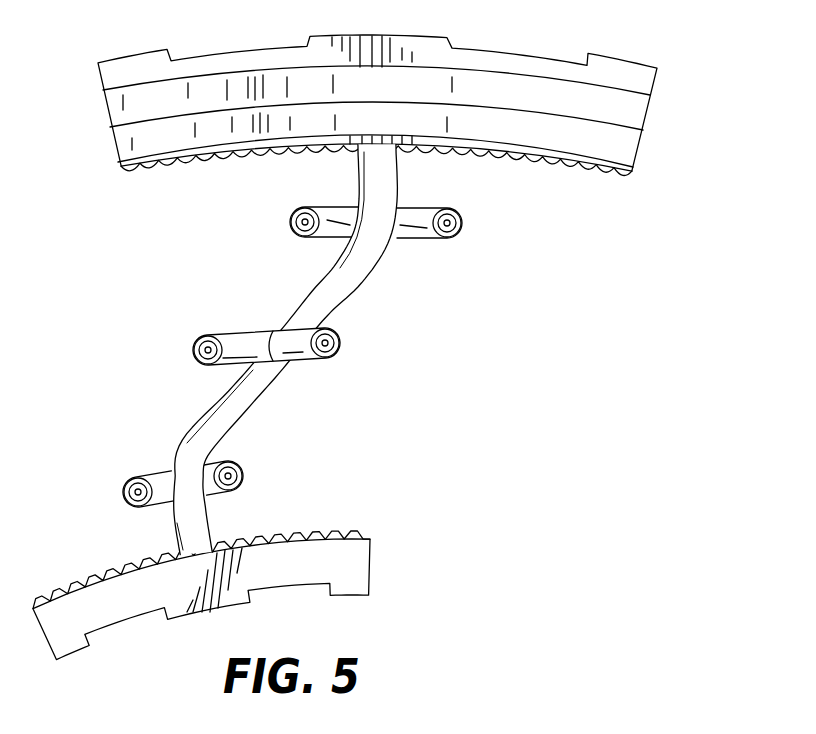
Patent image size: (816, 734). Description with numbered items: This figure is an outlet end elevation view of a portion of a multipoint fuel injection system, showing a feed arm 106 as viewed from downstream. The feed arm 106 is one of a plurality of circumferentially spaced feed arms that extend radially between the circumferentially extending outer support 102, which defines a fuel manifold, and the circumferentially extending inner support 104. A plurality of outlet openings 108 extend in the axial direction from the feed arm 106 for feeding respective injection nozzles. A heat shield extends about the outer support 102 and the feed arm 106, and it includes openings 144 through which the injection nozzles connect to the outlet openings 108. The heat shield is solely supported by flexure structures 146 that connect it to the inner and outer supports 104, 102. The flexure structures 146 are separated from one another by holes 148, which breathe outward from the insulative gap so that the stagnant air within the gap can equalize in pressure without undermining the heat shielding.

The outer support 102 is at (625, 152).
The inner support 104 is at (234, 562).
The feed arm 106 is at (360, 278).
The outlet openings 108 is at (293, 226).
The openings 144 is at (274, 349).
The flexure structures 146 is at (280, 537).
The holes 148 is at (297, 534).